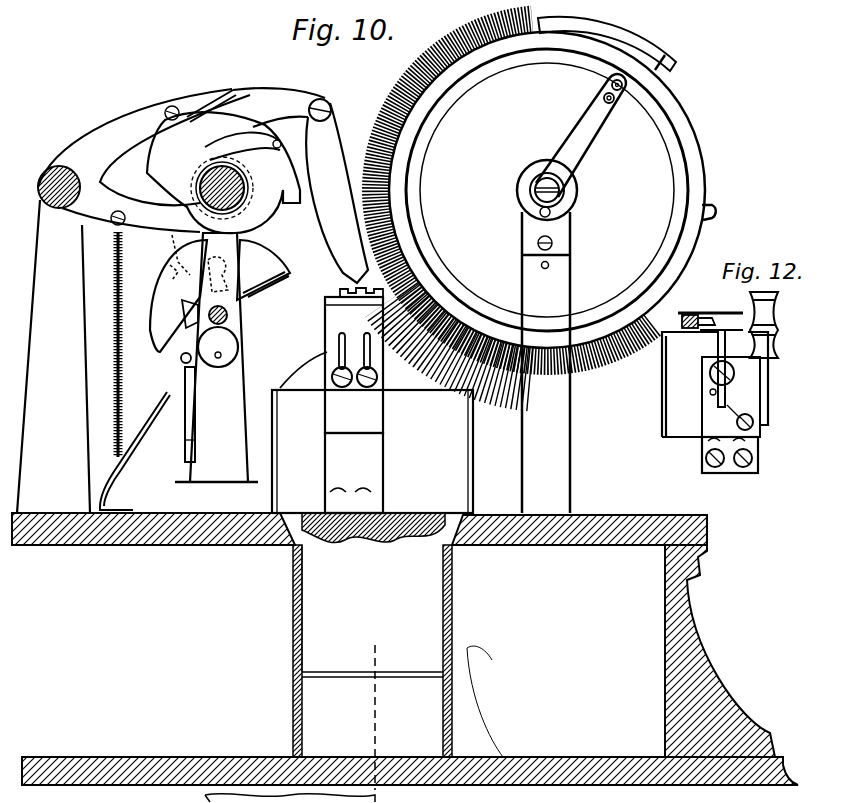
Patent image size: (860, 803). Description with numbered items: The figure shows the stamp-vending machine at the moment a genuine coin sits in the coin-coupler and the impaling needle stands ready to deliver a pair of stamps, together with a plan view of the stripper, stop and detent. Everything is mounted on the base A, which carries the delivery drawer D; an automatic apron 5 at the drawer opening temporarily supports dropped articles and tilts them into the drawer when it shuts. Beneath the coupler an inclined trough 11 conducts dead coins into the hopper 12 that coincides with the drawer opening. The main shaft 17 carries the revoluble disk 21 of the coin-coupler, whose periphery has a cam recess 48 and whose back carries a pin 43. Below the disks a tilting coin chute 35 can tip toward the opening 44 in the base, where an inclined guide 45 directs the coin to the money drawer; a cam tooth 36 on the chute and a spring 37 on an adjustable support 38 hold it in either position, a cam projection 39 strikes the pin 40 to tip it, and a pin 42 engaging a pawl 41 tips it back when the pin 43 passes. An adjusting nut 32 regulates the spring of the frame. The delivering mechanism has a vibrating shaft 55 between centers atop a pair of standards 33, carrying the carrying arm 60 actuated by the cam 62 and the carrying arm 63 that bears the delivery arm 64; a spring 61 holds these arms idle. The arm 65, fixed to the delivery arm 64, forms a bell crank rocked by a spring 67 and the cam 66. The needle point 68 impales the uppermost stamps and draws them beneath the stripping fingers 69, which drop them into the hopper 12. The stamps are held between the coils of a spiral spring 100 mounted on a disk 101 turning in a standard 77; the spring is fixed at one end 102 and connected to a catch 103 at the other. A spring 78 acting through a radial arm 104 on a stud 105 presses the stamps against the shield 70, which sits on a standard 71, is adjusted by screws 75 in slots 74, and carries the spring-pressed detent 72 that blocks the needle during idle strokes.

In FIG. 10, the base A is at (405, 657).
In FIG. 10, the delivery drawer D is at (372, 735).
In FIG. 10, the automatic apron 5 is at (347, 608).
In FIG. 10, the inclined trough 11 is at (376, 708).
In FIG. 10, the hopper 12 is at (473, 450).
In FIG. 12, the hopper 12 is at (662, 396).
In FIG. 10, the main shaft 17 is at (205, 188).
In FIG. 10, the disk 21 is at (223, 169).
In FIG. 10, the adjusting nut 32 is at (216, 357).
In FIG. 10, the standards 33 is at (53, 356).
In FIG. 10, the tilting coin chute 35 is at (178, 296).
In FIG. 10, the cam tooth 36 is at (192, 322).
In FIG. 10, the spring 37 is at (183, 356).
In FIG. 10, the adjustable support 38 is at (195, 425).
In FIG. 10, the cam projection 39 is at (172, 250).
In FIG. 10, the pin 40 is at (172, 270).
In FIG. 10, the pawl 41 is at (222, 256).
In FIG. 10, the pin 42 is at (230, 287).
In FIG. 10, the pin 43 is at (279, 141).
In FIG. 10, the opening 44 is at (95, 532).
In FIG. 10, the inclined guide 45 is at (132, 440).
In FIG. 10, the cam recess 48 is at (284, 198).
In FIG. 10, the vibrating shaft 55 is at (55, 178).
In FIG. 10, the carrying arm 60 is at (136, 216).
In FIG. 10, the spring 61 is at (115, 320).
In FIG. 10, the cam 62 is at (242, 147).
In FIG. 10, the carrying arm 63 is at (144, 160).
In FIG. 10, the delivery arm 64 is at (337, 193).
In FIG. 12, the delivery arm 64 is at (690, 315).
In FIG. 10, the arm 65 is at (303, 100).
In FIG. 10, the cam 66 is at (214, 168).
In FIG. 10, the spring 67 is at (218, 96).
In FIG. 12, the needle point 68 is at (706, 340).
In FIG. 10, the stripping fingers 69 is at (323, 368).
In FIG. 12, the stripping fingers 69 is at (727, 313).
In FIG. 10, the shield 70 is at (390, 310).
In FIG. 12, the shield 70 is at (772, 318).
In FIG. 10, the standard 71 is at (354, 473).
In FIG. 12, the standard 71 is at (760, 455).
In FIG. 10, the spring-pressed detent 72 is at (340, 291).
In FIG. 12, the spring-pressed detent 72 is at (724, 346).
In FIG. 10, the slots 74 is at (339, 341).
In FIG. 10, the screws 75 is at (343, 383).
In FIG. 12, the screws 75 is at (702, 452).
In FIG. 10, the standard 77 is at (546, 362).
In FIG. 10, the spring 78 is at (548, 191).
In FIG. 10, the spiral spring 100 is at (405, 98).
In FIG. 10, the disk 101 is at (547, 190).
In FIG. 10, the end 102 is at (604, 41).
In FIG. 10, the catch 103 is at (708, 226).
In FIG. 10, the radial arm 104 is at (590, 128).
In FIG. 10, the stud 105 is at (617, 102).